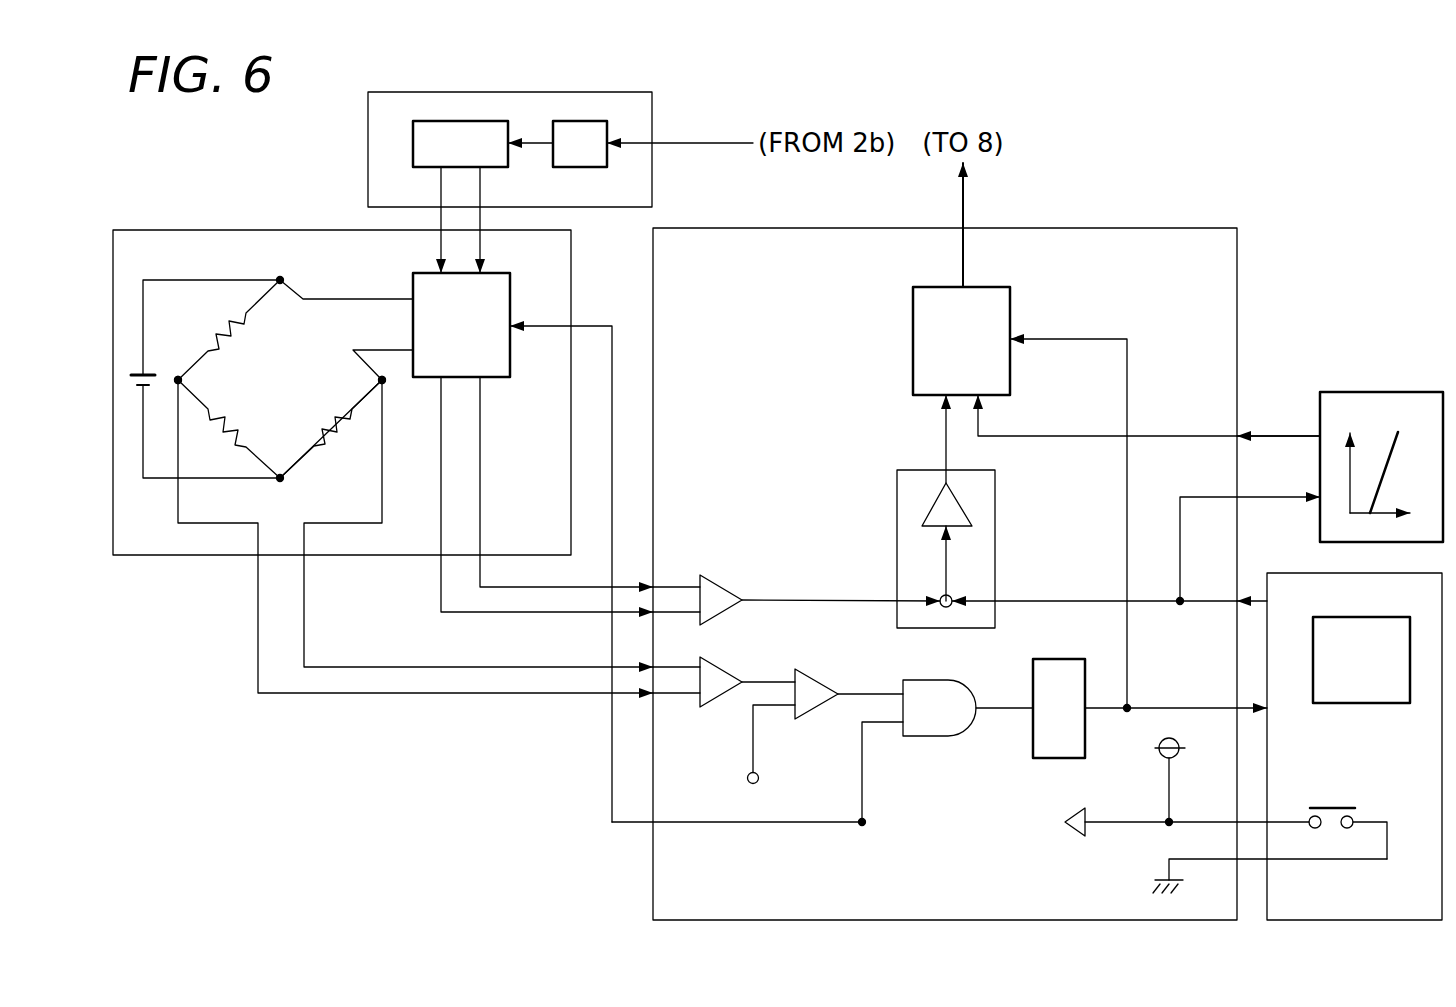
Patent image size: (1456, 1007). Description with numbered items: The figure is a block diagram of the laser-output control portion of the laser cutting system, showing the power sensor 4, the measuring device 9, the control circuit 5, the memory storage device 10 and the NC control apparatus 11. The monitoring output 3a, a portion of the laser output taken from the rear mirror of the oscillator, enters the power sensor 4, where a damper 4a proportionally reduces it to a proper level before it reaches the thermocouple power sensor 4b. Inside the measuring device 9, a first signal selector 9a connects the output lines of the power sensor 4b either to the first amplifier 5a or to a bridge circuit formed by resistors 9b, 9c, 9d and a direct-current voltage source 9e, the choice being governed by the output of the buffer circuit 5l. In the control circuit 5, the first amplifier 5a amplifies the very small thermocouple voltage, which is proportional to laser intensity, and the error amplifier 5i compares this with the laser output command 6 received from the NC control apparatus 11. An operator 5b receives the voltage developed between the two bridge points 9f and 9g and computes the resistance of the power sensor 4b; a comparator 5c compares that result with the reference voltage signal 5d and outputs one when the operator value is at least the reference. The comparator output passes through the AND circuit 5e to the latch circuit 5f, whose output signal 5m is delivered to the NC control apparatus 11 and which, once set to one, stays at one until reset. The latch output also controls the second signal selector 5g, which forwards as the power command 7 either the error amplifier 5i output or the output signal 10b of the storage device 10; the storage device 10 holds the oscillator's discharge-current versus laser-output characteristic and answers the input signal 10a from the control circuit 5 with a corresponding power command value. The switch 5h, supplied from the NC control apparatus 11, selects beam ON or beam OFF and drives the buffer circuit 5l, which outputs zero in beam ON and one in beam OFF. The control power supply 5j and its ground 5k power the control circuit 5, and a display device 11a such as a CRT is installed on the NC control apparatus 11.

The monitoring output 3a is at (690, 143).
The power sensor 4 is at (628, 92).
The damper 4a is at (583, 121).
The power sensor 4b is at (480, 121).
The control circuit 5 is at (1128, 228).
The first amplifier 5a is at (735, 588).
The operator 5b is at (735, 670).
The comparator 5c is at (825, 677).
The reference voltage signal 5d is at (748, 777).
The AND circuit 5e is at (918, 680).
The latch circuit 5f is at (1033, 672).
The second signal selector 5g is at (1010, 307).
The switch 5h is at (1335, 808).
The error amplifier 5i is at (995, 512).
The control power supply 5j is at (1158, 752).
The ground 5k is at (1158, 868).
The buffer circuit 5l is at (1062, 816).
The output signal of the latch circuit 5m is at (1240, 708).
The laser output command 6 is at (1255, 601).
The power command 7 is at (965, 200).
The measuring device 9 is at (235, 230).
The first signal selector 9a is at (503, 377).
The resistor 9b is at (325, 436).
The resistor 9c is at (243, 327).
The resistor 9d is at (228, 422).
The direct-current voltage source 9e is at (155, 375).
The bridge point 9f is at (182, 382).
The bridge point 9g is at (385, 382).
The memory storage device 10 is at (1390, 392).
The input signal 10a is at (1283, 497).
The output signal 10b is at (1283, 436).
The NC control apparatus 11 is at (1293, 573).
The display device 11a is at (1340, 703).